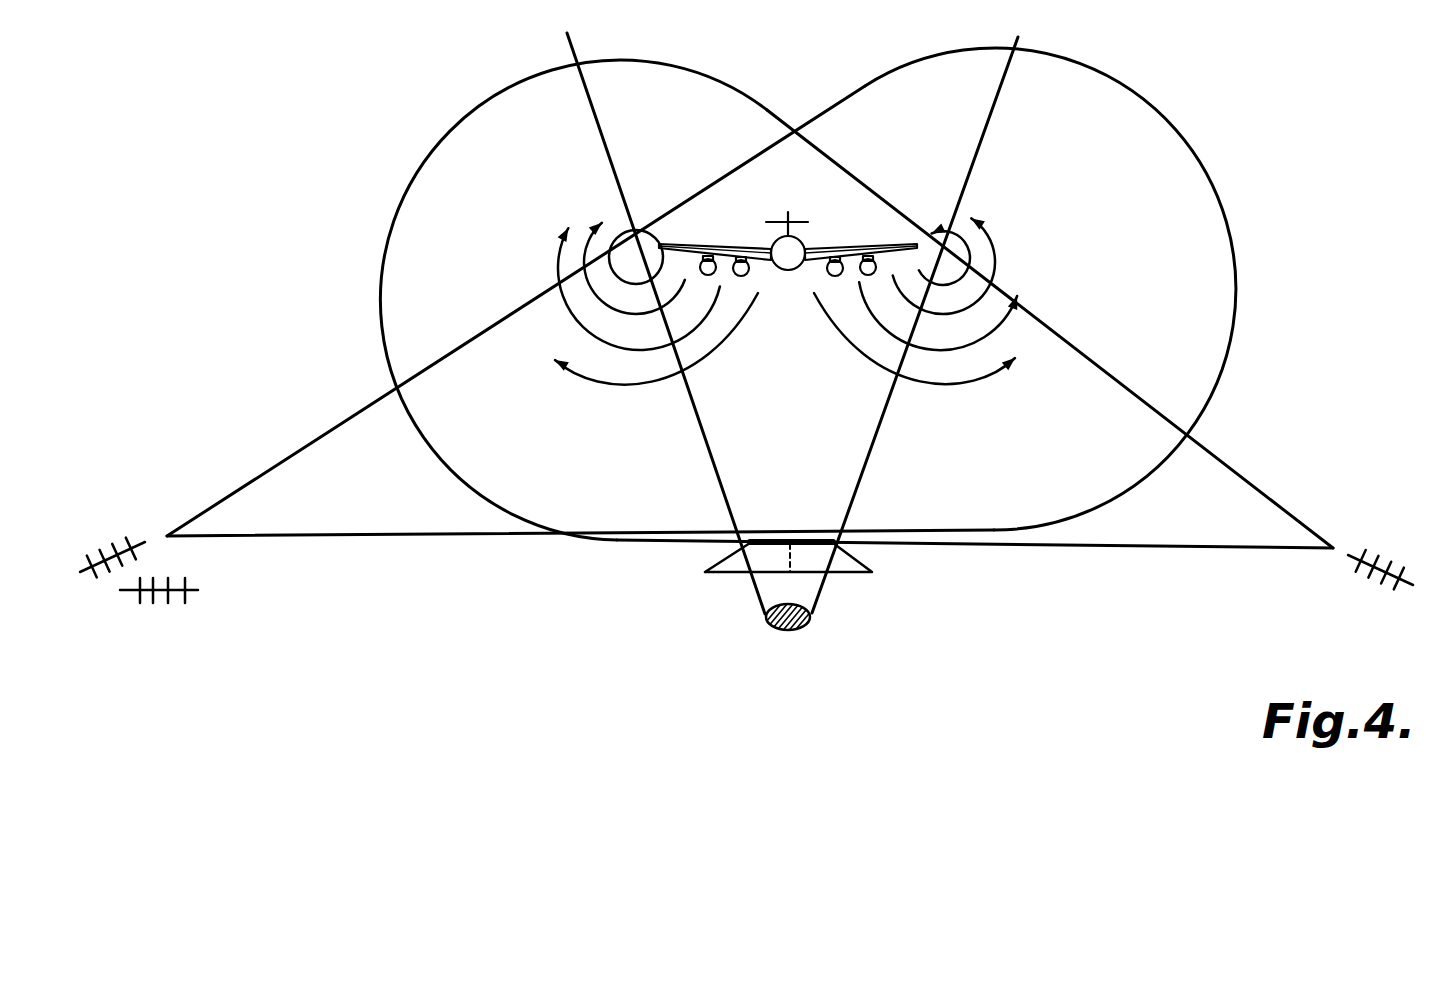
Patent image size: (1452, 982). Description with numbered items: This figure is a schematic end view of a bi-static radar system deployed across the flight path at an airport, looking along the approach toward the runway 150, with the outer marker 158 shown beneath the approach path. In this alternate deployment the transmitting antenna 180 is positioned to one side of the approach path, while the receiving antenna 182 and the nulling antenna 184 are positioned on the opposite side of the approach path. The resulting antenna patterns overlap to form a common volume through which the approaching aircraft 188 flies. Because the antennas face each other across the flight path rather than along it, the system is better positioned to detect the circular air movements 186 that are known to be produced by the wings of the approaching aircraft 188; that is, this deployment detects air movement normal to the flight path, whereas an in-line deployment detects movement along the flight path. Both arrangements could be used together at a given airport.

The runway 150 is at (736, 549).
The outer marker 158 is at (766, 617).
The transmitting antenna 180 is at (1382, 559).
The receiving antenna 182 is at (87, 558).
The nulling antenna 184 is at (139, 597).
The circular air movements 186 is at (613, 388).
The approaching aircraft 188 is at (816, 236).